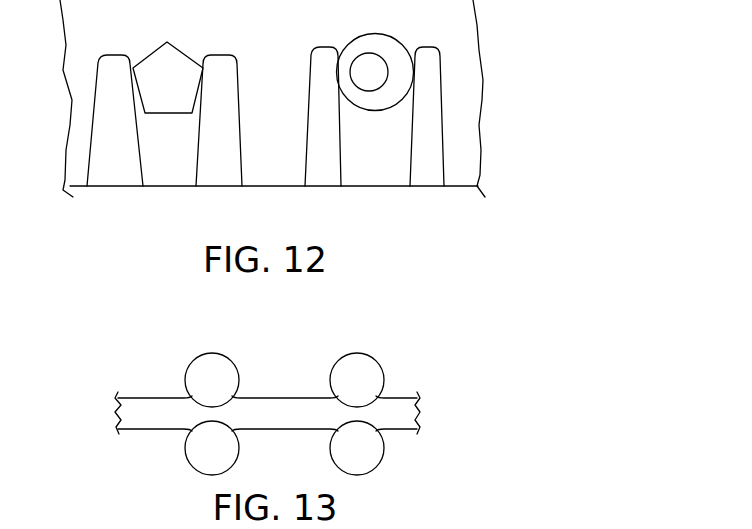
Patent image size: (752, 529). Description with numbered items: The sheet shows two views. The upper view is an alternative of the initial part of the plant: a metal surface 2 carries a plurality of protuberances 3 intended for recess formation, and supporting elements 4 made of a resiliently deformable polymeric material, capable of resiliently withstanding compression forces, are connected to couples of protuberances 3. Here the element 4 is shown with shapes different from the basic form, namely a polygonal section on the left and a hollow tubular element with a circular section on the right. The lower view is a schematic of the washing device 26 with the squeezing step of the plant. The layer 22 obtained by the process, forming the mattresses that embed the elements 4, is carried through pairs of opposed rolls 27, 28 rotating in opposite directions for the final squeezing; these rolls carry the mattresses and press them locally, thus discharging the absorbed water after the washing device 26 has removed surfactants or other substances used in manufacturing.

In FIG. 12, the metal surface 2 is at (352, 186).
In FIG. 12, the protuberances 3 is at (227, 162).
In FIG. 12, the supporting elements 4 is at (175, 63).
In FIG. 13, the layer 22 is at (142, 402).
In FIG. 13, the washing device 26 is at (306, 389).
In FIG. 13, the opposed rolls for final squeezing 27 is at (362, 441).
In FIG. 13, the opposed rolls for final squeezing 28 is at (217, 444).